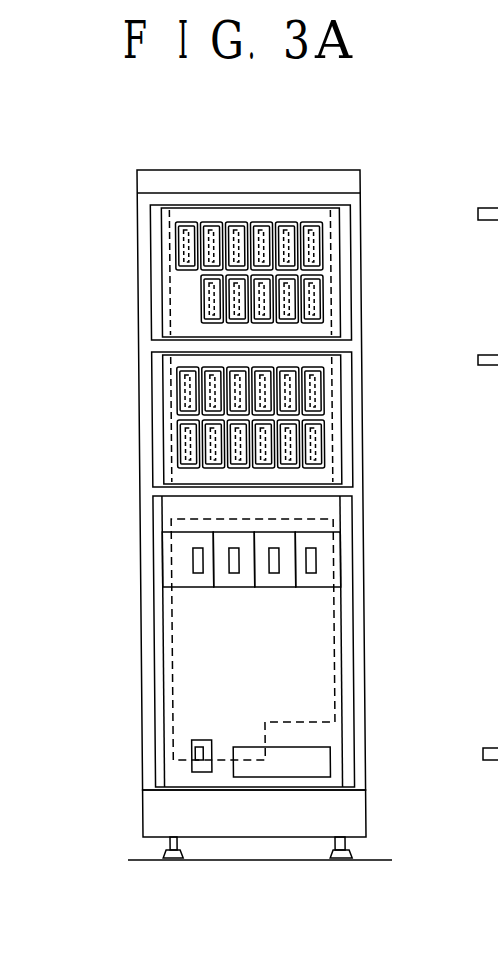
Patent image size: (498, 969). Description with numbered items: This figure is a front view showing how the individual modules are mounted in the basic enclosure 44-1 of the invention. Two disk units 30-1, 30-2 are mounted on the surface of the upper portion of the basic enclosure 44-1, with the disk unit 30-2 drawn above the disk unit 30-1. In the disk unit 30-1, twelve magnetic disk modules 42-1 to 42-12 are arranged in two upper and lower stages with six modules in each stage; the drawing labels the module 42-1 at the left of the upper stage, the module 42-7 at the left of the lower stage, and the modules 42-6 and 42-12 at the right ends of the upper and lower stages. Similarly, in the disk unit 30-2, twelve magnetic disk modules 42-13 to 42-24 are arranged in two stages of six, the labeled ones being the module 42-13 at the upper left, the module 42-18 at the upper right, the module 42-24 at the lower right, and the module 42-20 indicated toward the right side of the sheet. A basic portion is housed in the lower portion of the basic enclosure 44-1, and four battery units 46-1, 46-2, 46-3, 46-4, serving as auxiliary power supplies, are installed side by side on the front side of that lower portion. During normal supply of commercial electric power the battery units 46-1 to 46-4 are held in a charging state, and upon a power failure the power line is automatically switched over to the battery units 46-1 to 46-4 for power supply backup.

The basic enclosure 44-1 is at (431, 157).
The disk unit 30-2 is at (345, 217).
The disk unit 30-1 is at (345, 380).
The magnetic disk module 42-13 is at (189, 222).
The magnetic disk module 42-18 is at (320, 248).
The magnetic disk module 42-24 is at (320, 302).
The magnetic disk module 42-20 is at (466, 275).
The magnetic disk module 42-1 is at (180, 395).
The magnetic disk module 42-7 is at (178, 453).
The magnetic disk module 42-6 is at (318, 402).
The magnetic disk module 42-12 is at (318, 455).
The battery unit 46-1 is at (315, 583).
The battery unit 46-2 is at (277, 585).
The battery unit 46-3 is at (237, 583).
The battery unit 46-4 is at (198, 583).